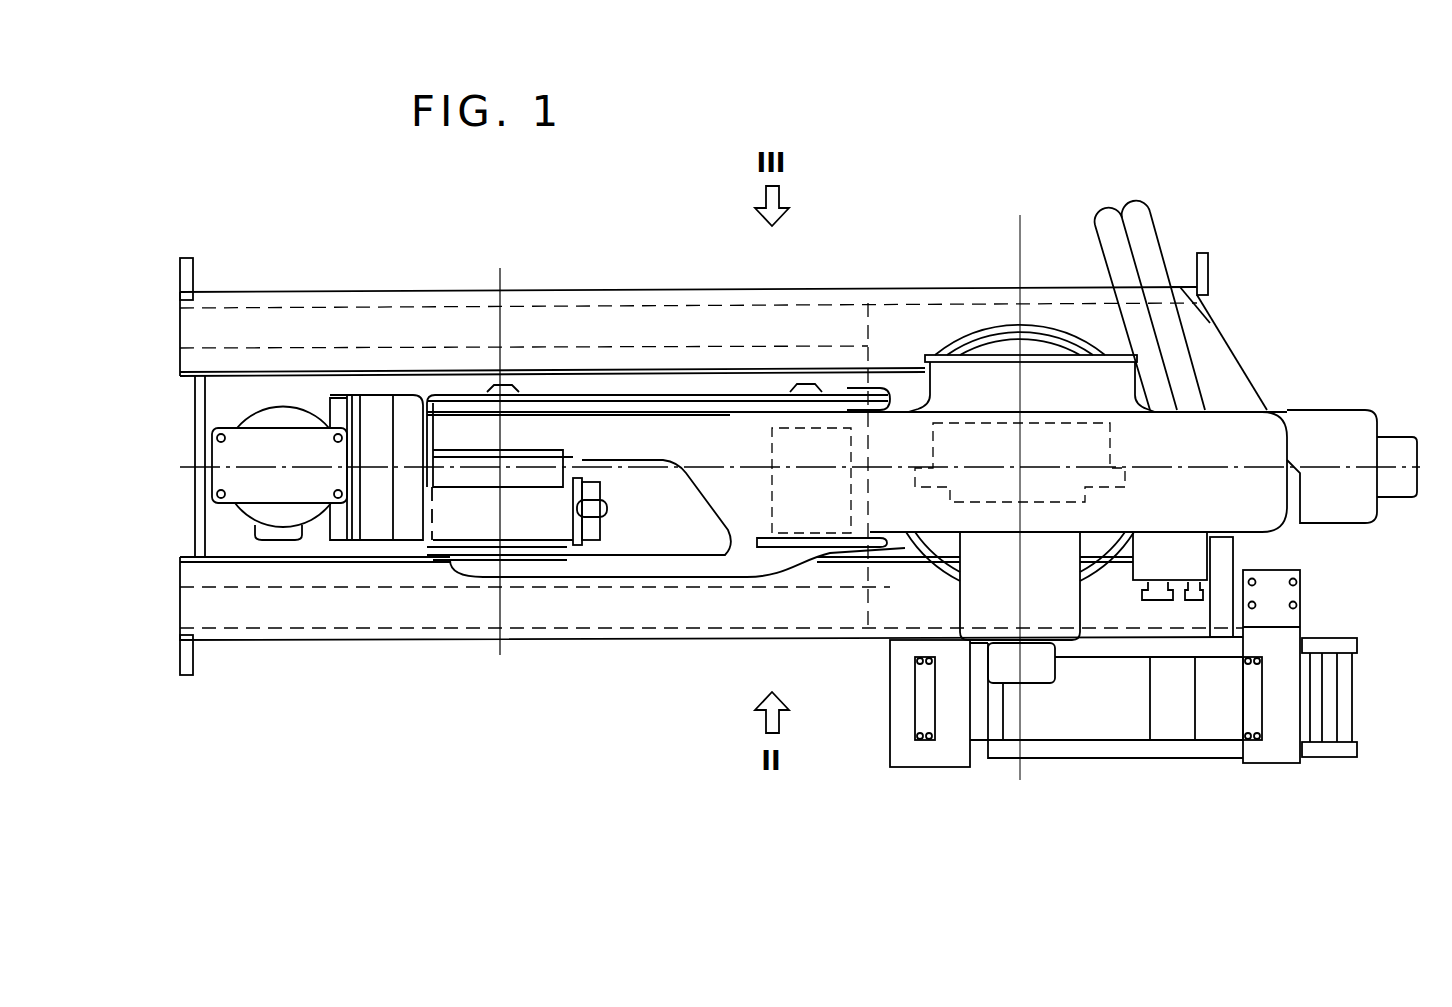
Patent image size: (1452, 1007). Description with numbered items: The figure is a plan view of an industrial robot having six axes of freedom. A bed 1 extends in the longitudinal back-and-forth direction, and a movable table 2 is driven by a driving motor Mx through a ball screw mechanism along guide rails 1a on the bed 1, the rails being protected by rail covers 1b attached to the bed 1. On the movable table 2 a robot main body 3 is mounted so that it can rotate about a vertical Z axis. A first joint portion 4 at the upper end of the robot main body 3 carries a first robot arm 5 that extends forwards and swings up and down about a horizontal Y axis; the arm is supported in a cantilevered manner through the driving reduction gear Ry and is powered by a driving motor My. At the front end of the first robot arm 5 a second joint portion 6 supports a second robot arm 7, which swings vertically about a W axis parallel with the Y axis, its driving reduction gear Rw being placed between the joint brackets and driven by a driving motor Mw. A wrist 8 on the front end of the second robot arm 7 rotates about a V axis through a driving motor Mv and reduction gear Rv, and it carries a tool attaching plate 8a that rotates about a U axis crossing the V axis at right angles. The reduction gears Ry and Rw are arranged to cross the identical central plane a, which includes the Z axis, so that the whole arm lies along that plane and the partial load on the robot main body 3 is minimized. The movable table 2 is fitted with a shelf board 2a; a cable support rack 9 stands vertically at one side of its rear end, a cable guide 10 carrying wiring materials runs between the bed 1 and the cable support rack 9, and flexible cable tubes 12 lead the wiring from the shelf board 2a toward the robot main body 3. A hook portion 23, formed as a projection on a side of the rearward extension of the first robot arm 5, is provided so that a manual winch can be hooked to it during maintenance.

The bed 1 is at (341, 643).
The guide rails 1a is at (598, 320).
The rail covers 1b is at (446, 292).
The movable table 2 is at (905, 305).
The shelf board 2a is at (1213, 357).
The robot main body 3 is at (1042, 346).
The first joint portion 4 is at (998, 348).
The first robot arm 5 is at (902, 513).
The second joint portion 6 is at (521, 385).
The second robot arm 7 is at (558, 525).
The wrist 8 is at (263, 404).
The tool attaching plate 8a is at (292, 497).
The cable support rack 9 is at (1257, 752).
The cable guide 10 is at (1338, 750).
The flexible cable tubes 12 is at (1120, 257).
The hook portion 23 is at (1222, 620).
The U axis U is at (276, 467).
The W axis W is at (507, 648).
The Y axis Y is at (1022, 272).
The Z axis Z is at (1020, 467).
The central plane a is at (752, 465).
The driving reduction gear for the wrist Rv is at (371, 410).
The driving reduction gear of the second robot arm Rw is at (456, 470).
The driving reduction gear of the first robot arm Ry is at (1000, 500).
The driving motor for the wrist Mv is at (604, 522).
The driving motor for the second robot arm Mw is at (800, 520).
The driving motor Mx is at (1310, 425).
The driving motor for the first robot arm My is at (1070, 633).